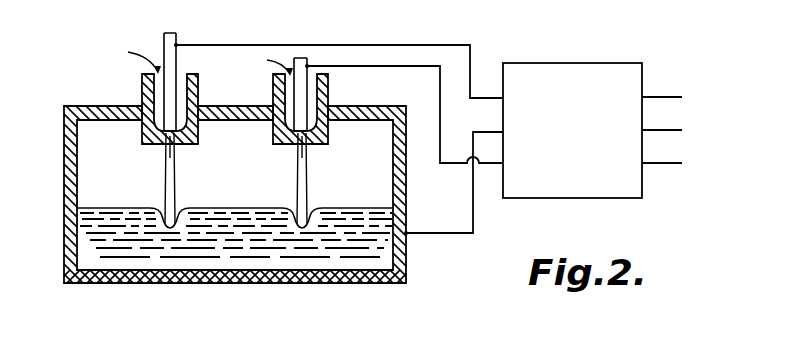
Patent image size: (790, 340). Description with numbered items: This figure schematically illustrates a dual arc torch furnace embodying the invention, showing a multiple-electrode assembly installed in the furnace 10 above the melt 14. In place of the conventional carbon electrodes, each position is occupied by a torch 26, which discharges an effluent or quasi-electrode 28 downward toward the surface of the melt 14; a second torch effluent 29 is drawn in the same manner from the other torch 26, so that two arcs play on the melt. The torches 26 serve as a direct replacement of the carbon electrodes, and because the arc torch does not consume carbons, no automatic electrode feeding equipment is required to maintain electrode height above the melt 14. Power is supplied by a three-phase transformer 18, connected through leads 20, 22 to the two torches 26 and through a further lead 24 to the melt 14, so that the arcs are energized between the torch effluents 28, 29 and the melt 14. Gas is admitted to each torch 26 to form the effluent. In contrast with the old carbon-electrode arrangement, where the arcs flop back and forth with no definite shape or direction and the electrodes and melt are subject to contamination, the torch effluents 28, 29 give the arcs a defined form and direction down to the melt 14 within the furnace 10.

The furnace 10 is at (64, 182).
The melt 14 is at (255, 243).
The three-phase transformer 18 is at (562, 82).
The lead 20 is at (411, 45).
The lead 22 is at (440, 85).
The lead 24 is at (442, 233).
The torch 26 is at (142, 91).
The effluent or quasi-electrode 28 is at (297, 178).
The arc 29 is at (167, 178).